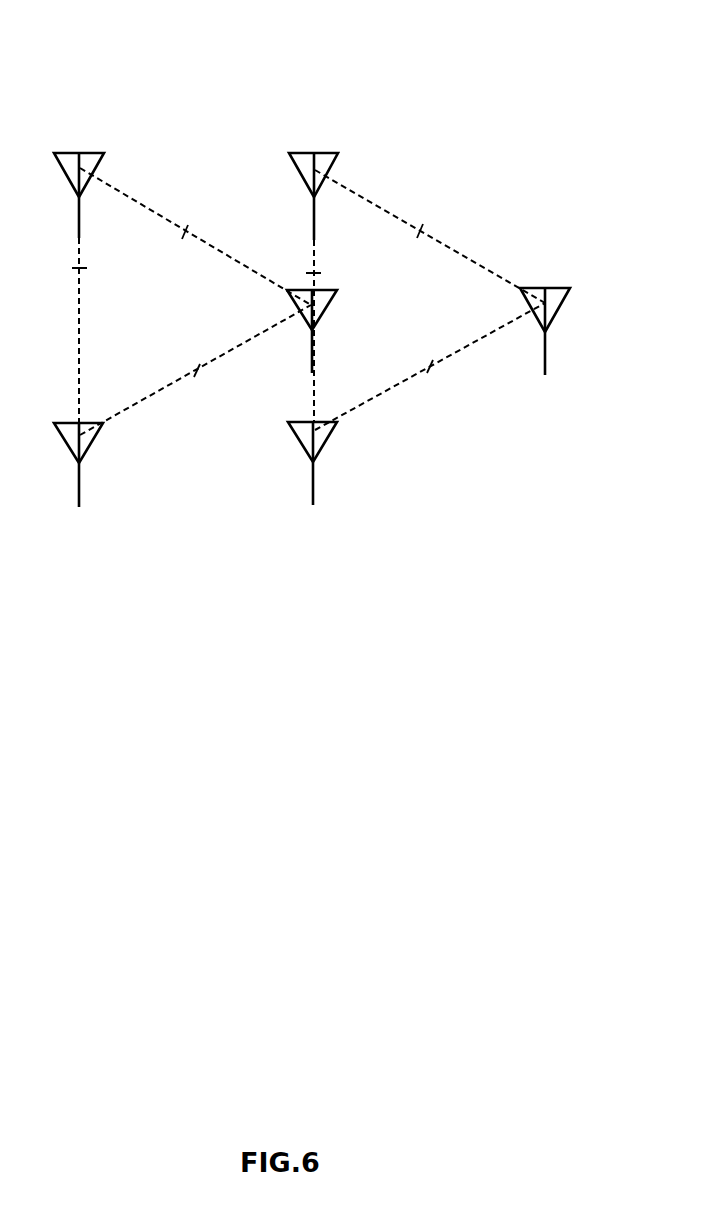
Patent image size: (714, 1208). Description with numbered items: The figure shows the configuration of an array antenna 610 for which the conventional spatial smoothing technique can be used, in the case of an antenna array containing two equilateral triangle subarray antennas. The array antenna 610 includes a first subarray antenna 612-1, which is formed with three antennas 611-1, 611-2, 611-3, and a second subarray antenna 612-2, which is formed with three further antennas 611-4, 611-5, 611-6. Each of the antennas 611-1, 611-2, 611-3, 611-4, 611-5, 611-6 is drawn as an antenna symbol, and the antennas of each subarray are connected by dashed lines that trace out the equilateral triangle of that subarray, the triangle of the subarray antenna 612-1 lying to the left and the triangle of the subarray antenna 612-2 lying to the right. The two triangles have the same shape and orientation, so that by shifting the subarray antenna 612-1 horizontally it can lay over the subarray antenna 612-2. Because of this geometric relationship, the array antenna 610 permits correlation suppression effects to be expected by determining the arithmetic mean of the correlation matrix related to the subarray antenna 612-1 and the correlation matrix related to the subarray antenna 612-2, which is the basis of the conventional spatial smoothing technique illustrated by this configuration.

The array antenna 610 is at (294, 41).
The antenna 611-1 is at (87, 153).
The antenna 611-2 is at (328, 290).
The antenna 611-3 is at (90, 452).
The antenna 611-4 is at (322, 153).
The antenna 611-5 is at (562, 288).
The antenna 611-6 is at (324, 448).
The subarray antenna 612-1 is at (202, 240).
The subarray antenna 612-2 is at (482, 230).